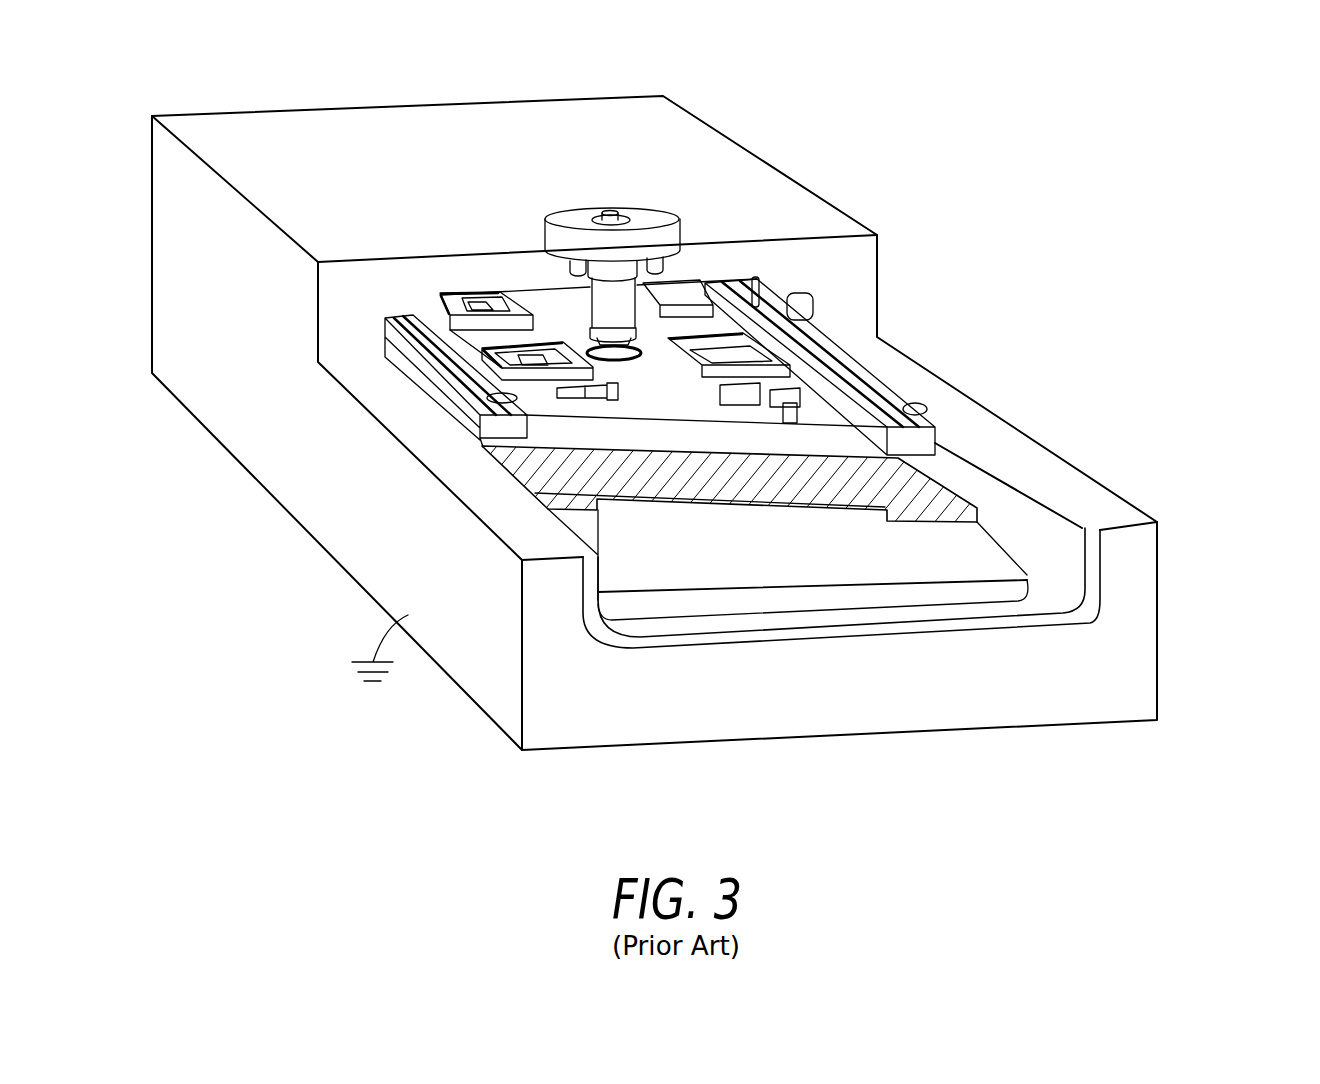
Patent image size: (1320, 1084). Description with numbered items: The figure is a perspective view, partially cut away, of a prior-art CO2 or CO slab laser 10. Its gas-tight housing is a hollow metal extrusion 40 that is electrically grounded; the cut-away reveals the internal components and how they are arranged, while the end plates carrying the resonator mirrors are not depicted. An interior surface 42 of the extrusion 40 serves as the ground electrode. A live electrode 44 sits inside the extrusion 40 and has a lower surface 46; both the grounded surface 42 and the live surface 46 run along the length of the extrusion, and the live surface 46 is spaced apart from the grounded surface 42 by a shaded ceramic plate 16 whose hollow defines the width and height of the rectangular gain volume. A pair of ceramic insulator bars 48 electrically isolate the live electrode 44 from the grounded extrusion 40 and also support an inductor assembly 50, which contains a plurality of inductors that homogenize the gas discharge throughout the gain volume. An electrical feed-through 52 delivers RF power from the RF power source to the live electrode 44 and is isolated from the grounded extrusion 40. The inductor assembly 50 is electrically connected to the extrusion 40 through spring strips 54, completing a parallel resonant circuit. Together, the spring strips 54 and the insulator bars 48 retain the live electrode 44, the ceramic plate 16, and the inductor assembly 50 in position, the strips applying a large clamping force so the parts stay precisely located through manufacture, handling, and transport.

The slab laser 10 is at (1140, 140).
The ceramic plate 16 is at (673, 495).
The hollow metal extrusion 40 is at (350, 535).
The interior surface 42 is at (930, 550).
The live electrode 44 is at (838, 430).
The lower surface 46 is at (795, 460).
The ceramic insulator bars 48 is at (440, 393).
The inductor assembly 50 is at (487, 297).
The electrical feed-through 52 is at (650, 208).
The spring strips 54 is at (437, 347).